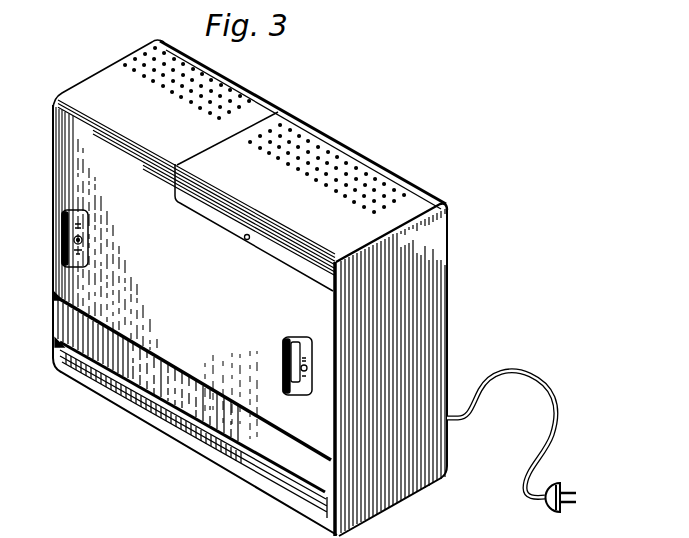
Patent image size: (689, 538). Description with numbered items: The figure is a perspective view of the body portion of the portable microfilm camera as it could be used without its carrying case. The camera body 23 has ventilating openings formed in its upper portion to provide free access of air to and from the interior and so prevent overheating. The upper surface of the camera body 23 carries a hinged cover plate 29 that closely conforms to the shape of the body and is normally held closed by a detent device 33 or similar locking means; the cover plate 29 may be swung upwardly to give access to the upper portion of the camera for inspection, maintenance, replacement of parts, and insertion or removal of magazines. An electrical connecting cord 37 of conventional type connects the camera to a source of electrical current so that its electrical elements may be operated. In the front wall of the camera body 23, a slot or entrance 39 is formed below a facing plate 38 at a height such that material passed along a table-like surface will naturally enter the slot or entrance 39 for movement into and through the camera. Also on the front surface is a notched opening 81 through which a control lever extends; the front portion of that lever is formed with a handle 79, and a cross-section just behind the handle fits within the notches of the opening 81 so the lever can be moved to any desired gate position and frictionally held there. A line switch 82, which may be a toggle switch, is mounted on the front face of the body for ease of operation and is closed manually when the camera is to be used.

The camera body 23 is at (428, 234).
The hinged cover plate 29 is at (422, 190).
The detent device 33 is at (247, 240).
The electrical connecting cord 37 is at (547, 386).
The facing plate 38 is at (67, 323).
The slot or entrance 39 is at (245, 461).
The handle 79 is at (291, 362).
The notched opening 81 is at (302, 341).
The line switch 82 is at (66, 239).